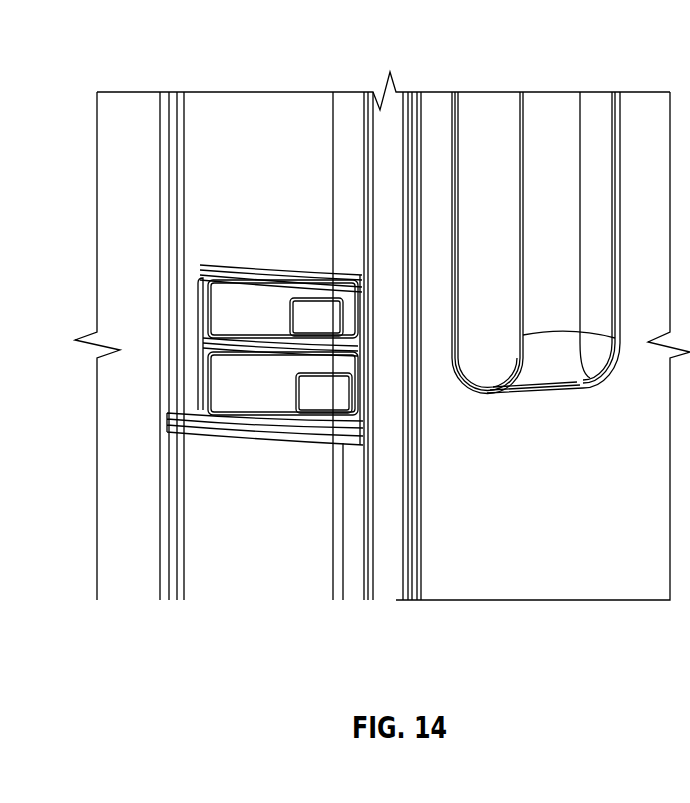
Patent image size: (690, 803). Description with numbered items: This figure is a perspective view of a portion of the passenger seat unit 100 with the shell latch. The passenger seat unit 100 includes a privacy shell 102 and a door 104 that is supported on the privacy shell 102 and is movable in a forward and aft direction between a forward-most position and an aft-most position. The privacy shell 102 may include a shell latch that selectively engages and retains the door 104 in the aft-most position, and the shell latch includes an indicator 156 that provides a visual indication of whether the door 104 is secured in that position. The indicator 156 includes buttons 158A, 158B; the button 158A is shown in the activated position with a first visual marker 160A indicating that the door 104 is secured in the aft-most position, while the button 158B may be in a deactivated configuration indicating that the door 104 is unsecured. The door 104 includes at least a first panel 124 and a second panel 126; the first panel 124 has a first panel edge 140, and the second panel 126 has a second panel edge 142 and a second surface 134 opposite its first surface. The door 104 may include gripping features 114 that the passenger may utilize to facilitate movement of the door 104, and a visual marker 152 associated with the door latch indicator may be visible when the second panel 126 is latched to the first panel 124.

The passenger seat unit 100 is at (205, 64).
The privacy shell 102 is at (290, 110).
The door 104 is at (600, 575).
The gripping features 114 is at (540, 110).
The first panel 124 is at (393, 560).
The second panel 126 is at (643, 110).
The second surface 134 is at (487, 575).
The first panel edge 140 is at (390, 108).
The second panel edge 142 is at (405, 473).
The visual marker 152 is at (240, 295).
The indicator 156 is at (198, 372).
The button 158A is at (312, 305).
The button 158B is at (268, 405).
The first visual marker 160A is at (217, 338).